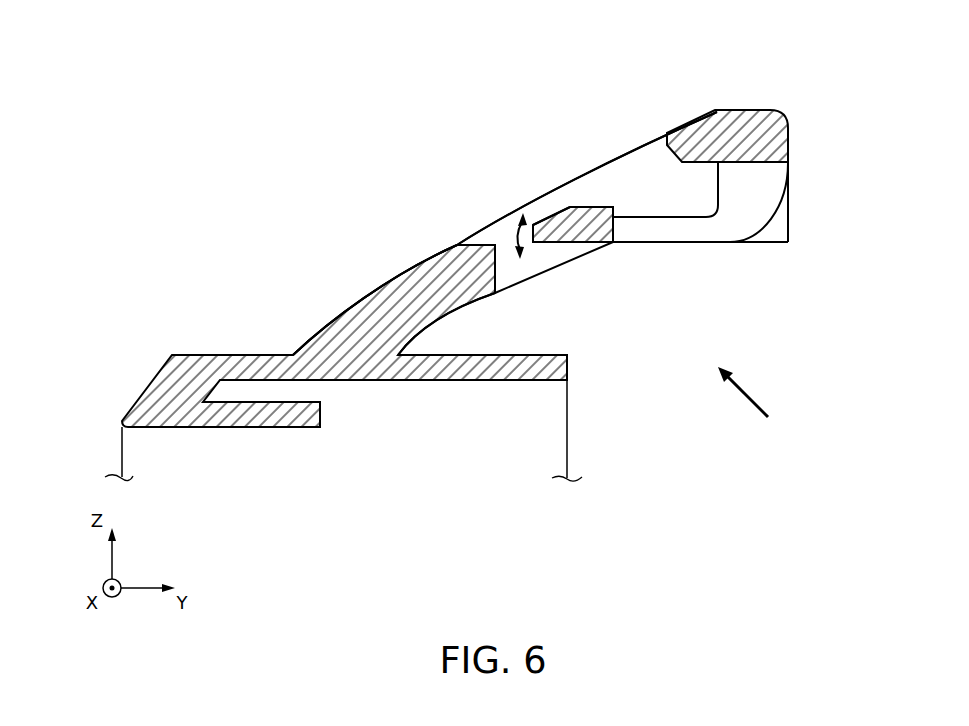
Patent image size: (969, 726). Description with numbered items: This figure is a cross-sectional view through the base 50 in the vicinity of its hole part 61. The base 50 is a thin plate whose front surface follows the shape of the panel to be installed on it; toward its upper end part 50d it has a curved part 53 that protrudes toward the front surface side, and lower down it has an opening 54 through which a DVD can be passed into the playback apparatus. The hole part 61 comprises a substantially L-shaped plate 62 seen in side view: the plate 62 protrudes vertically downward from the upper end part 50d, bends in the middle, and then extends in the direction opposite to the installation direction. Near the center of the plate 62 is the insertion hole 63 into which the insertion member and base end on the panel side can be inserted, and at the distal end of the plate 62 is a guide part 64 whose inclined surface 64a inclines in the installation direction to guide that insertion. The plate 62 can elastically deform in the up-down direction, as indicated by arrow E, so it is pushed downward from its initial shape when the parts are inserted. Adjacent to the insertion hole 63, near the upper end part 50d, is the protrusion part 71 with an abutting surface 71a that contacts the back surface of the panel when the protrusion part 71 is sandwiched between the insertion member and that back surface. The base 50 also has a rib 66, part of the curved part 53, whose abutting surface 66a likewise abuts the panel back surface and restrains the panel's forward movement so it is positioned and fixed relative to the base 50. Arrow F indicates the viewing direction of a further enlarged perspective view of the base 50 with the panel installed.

The base 50 is at (203, 350).
The upper end part 50d is at (783, 116).
The curved part 53 is at (363, 313).
The opening 54 is at (133, 446).
The hole part 61 is at (638, 252).
The plate 62 is at (690, 233).
The insertion hole 63 is at (752, 218).
The guide part 64 is at (587, 207).
The inclined surface 64a is at (550, 220).
The rib 66 is at (443, 308).
The abutting surface 66a is at (398, 278).
The protrusion part 71 is at (752, 122).
The abutting surface 71a is at (697, 117).
The arrow E is at (512, 238).
The arrow F is at (748, 390).